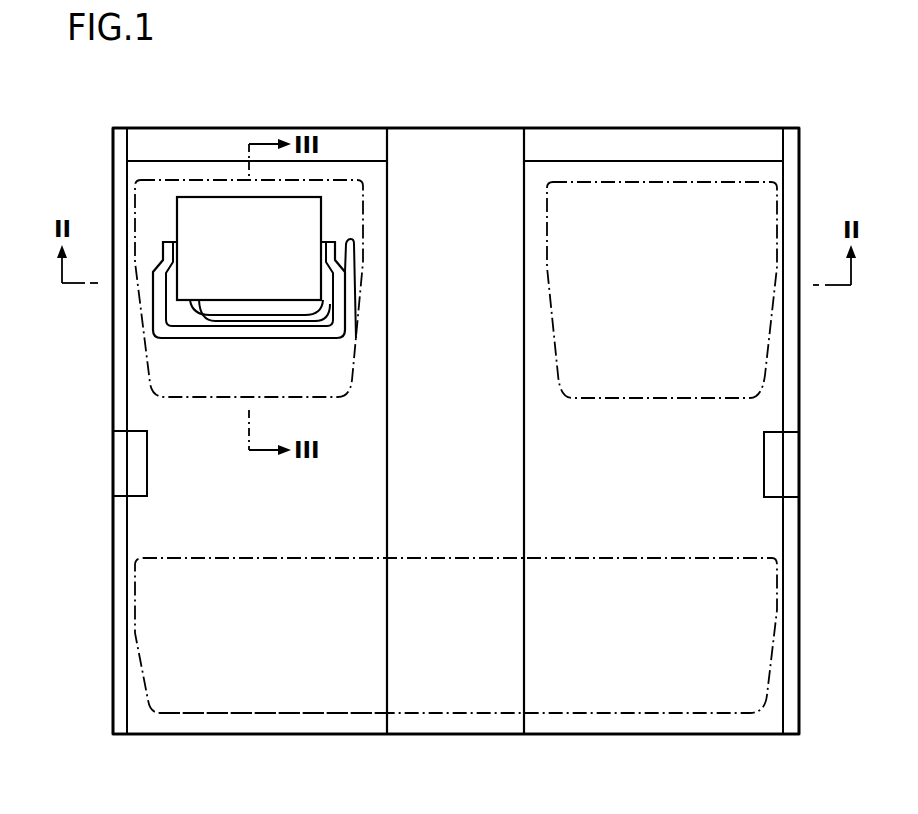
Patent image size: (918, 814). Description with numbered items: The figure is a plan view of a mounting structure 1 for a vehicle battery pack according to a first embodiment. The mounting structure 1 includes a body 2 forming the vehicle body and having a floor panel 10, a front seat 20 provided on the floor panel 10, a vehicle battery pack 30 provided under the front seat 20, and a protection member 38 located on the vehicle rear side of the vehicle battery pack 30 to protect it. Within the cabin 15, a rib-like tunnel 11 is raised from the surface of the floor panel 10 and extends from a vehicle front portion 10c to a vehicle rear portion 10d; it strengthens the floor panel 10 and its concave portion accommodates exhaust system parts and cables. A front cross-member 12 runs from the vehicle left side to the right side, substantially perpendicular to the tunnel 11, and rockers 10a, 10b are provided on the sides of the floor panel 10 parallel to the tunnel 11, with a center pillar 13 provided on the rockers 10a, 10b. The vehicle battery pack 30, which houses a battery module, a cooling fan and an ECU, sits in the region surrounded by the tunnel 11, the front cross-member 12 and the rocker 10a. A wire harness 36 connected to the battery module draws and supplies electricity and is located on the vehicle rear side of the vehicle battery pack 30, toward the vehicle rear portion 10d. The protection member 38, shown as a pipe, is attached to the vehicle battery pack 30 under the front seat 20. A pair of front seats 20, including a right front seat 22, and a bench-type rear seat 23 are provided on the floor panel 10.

The mounting structure 1 is at (785, 92).
The body 2 is at (103, 412).
The floor panel 10 is at (740, 423).
The rocker 10a is at (120, 633).
The rocker 10b is at (790, 640).
The vehicle front portion 10c is at (623, 128).
The vehicle rear portion 10d is at (660, 735).
The tunnel 11 is at (458, 145).
The front cross-member 12 is at (151, 147).
The center pillar 13 is at (135, 465).
The cabin 15 is at (219, 716).
The front seat 20 is at (136, 313).
The right front seat 22 is at (773, 313).
The rear seat 23 is at (783, 594).
The vehicle battery pack 30 is at (222, 222).
The wire harness 36 is at (204, 315).
The protection member 38 is at (238, 333).